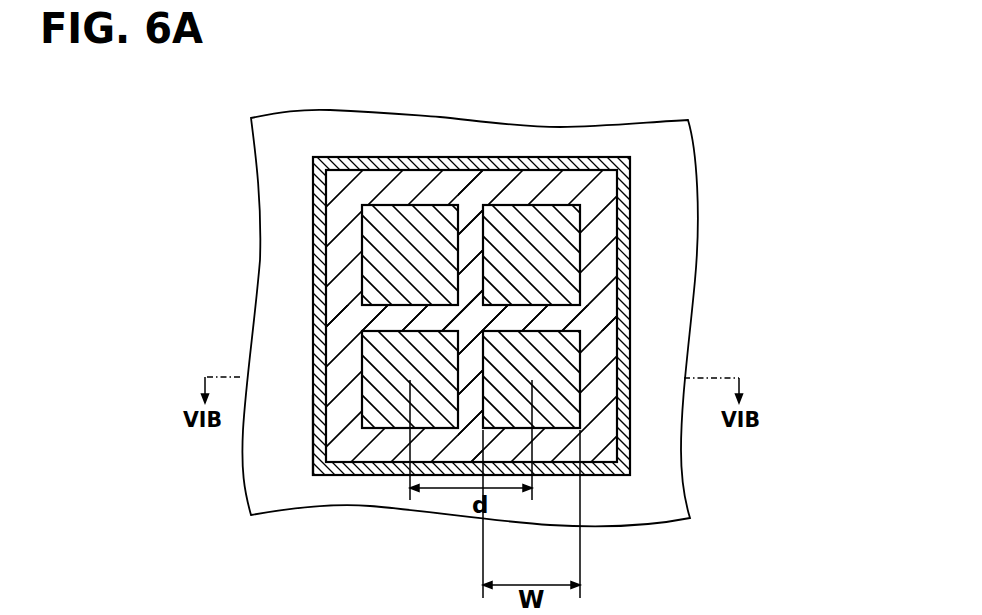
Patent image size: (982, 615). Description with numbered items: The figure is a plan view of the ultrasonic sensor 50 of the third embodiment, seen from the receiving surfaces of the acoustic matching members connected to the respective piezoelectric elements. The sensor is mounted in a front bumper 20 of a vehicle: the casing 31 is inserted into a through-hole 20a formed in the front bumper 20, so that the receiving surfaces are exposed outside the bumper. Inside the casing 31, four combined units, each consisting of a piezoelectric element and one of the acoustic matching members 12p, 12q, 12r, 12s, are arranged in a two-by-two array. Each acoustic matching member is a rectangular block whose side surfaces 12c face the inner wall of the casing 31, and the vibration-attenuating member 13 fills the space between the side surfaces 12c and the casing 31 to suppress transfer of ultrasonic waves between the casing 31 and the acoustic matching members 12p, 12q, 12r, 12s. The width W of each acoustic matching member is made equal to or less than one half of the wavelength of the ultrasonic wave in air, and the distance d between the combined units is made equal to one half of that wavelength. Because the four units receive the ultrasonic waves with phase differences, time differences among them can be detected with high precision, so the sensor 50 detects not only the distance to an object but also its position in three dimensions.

The ultrasonic sensor 50 is at (647, 110).
The front bumper 20 is at (582, 138).
The through-hole 20a is at (313, 437).
The casing 31 is at (313, 232).
The vibration-attenuating member 13 is at (602, 457).
The side surfaces 12c is at (360, 212).
The acoustic matching member 12r is at (420, 213).
The acoustic matching member 12s is at (510, 217).
The acoustic matching member 12p is at (388, 416).
The acoustic matching member 12q is at (556, 418).